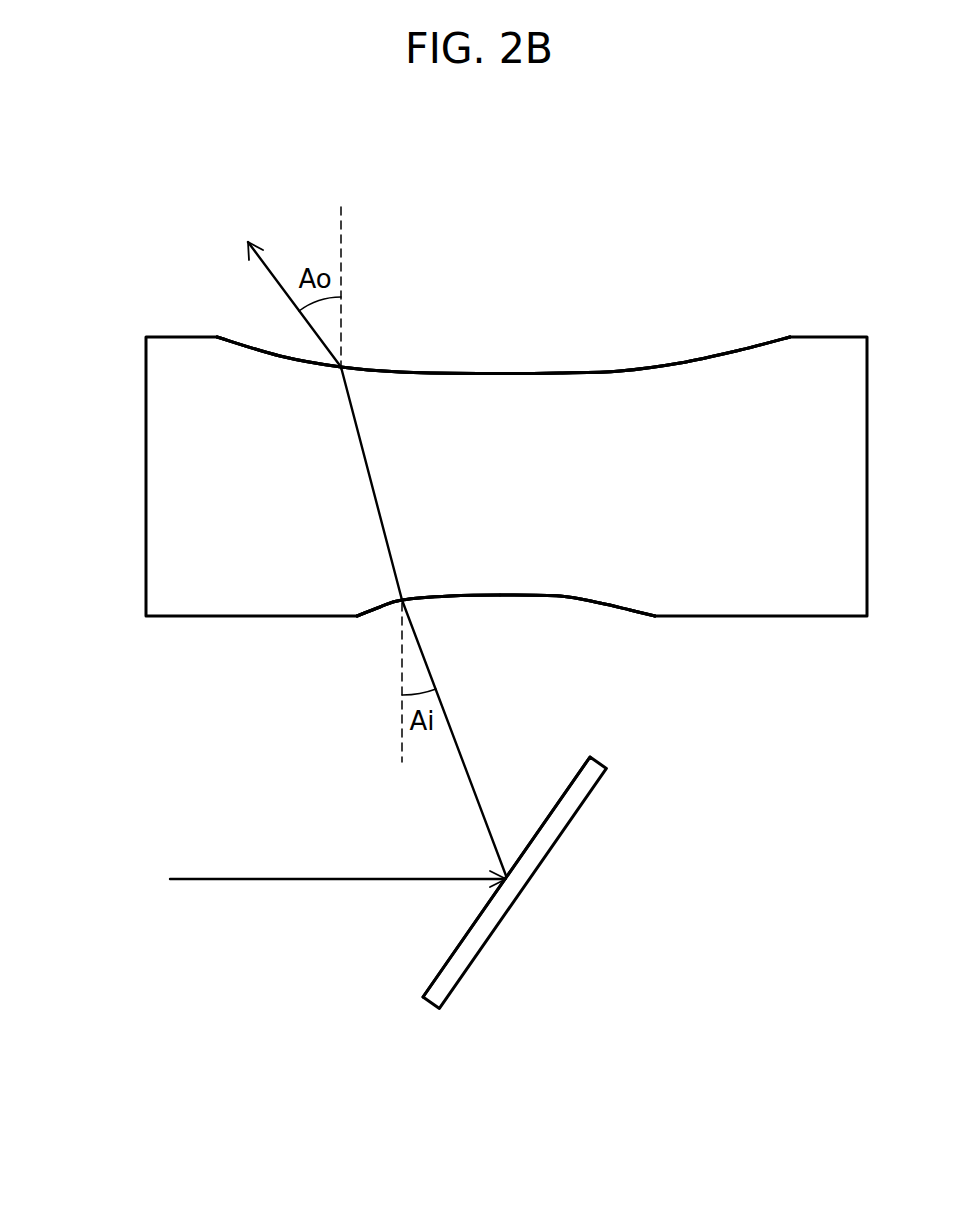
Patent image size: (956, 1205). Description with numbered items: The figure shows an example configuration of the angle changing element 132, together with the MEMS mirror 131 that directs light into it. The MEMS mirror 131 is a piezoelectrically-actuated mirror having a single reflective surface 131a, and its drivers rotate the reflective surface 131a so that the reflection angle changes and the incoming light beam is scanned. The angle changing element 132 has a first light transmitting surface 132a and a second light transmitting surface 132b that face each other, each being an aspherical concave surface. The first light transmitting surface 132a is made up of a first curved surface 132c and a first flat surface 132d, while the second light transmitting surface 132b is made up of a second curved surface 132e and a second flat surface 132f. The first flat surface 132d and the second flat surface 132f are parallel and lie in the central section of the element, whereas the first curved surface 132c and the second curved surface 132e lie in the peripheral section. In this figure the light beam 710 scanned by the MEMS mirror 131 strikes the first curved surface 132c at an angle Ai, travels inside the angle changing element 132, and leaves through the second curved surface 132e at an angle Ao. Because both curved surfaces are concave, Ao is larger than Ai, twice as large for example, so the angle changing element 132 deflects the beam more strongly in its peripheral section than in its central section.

The angle changing element 132 is at (144, 482).
The first light transmitting surface 132a is at (455, 684).
The second light transmitting surface 132b is at (357, 283).
The first curved surface 132c is at (433, 597).
The first flat surface 132d is at (527, 597).
The second curved surface 132e is at (362, 368).
The second flat surface 132f is at (525, 372).
The MEMS mirror 131 is at (431, 1004).
The reflective surface 131a is at (584, 752).
The light beam 710 is at (480, 813).